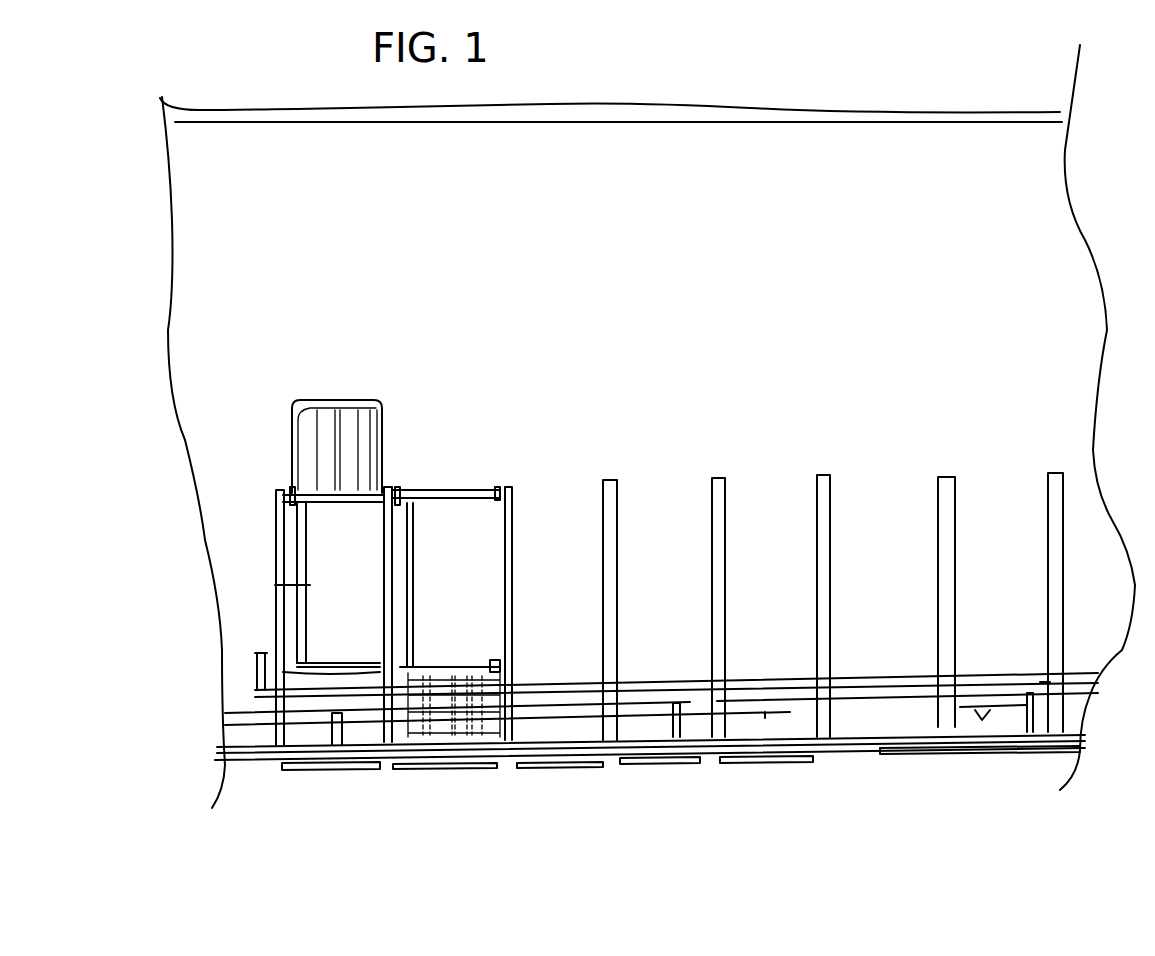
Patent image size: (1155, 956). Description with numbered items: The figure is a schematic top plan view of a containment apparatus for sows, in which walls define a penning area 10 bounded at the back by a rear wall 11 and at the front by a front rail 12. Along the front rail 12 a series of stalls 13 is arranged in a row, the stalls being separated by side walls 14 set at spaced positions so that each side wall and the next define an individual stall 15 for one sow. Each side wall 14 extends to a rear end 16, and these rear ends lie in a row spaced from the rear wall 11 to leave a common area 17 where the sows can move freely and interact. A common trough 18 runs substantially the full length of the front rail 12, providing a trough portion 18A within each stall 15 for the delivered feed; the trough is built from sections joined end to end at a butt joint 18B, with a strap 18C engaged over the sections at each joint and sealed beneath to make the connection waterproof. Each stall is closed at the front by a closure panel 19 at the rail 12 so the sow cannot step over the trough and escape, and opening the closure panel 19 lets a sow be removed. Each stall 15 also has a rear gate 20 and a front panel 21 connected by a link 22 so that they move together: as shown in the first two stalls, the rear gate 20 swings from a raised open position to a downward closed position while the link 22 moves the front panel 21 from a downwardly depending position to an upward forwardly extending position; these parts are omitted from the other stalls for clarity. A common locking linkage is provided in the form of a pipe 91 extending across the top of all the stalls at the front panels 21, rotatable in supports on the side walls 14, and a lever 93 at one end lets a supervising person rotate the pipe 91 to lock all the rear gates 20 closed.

The penning area 10 is at (866, 182).
The rear wall 11 is at (764, 115).
The front rail 12 is at (778, 760).
The stalls 13 is at (697, 442).
The side walls 14 is at (280, 533).
The stall 15 is at (578, 625).
The rear end 16 is at (607, 478).
The common area 17 is at (608, 290).
The common trough 18 is at (882, 692).
The trough portion 18A is at (765, 716).
The butt joint 18B is at (345, 740).
The strap 18C is at (1045, 680).
The closure panel 19 is at (338, 770).
The rear gate 20 is at (347, 400).
The front panel 21 is at (320, 660).
The link 22 is at (292, 586).
The pipe 91 is at (663, 678).
The lever 93 is at (255, 672).